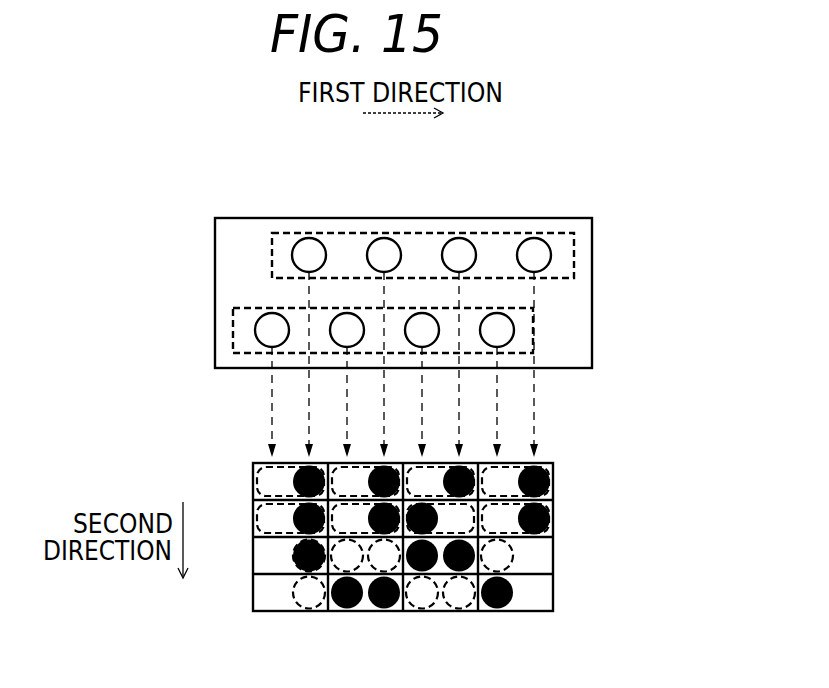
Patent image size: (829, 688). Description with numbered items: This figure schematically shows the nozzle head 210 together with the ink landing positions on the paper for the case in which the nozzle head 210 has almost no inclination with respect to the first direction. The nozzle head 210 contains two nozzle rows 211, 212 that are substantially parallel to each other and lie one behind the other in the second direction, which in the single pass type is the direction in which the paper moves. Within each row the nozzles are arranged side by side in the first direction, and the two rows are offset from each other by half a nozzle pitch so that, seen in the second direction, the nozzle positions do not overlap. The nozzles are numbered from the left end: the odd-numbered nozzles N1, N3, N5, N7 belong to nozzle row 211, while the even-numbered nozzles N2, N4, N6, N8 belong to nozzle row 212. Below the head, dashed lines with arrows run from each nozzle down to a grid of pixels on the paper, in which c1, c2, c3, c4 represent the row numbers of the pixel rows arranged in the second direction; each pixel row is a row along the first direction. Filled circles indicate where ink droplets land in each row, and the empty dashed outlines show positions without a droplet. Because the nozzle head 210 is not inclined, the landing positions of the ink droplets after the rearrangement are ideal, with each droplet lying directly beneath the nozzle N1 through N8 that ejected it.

The nozzle head 210 is at (592, 221).
The nozzle row 211 is at (233, 318).
The nozzle row 212 is at (575, 255).
The nozzle No. 1 N1 is at (271, 313).
The nozzle No. 2 N2 is at (308, 238).
The nozzle No. 3 N3 is at (346, 313).
The nozzle No. 4 N4 is at (383, 238).
The nozzle No. 5 N5 is at (421, 313).
The nozzle No. 6 N6 is at (458, 238).
The nozzle No. 7 N7 is at (496, 313).
The nozzle No. 8 N8 is at (533, 238).
The row number c1 is at (237, 487).
The row number c2 is at (237, 524).
The row number c3 is at (237, 561).
The row number c4 is at (237, 598).